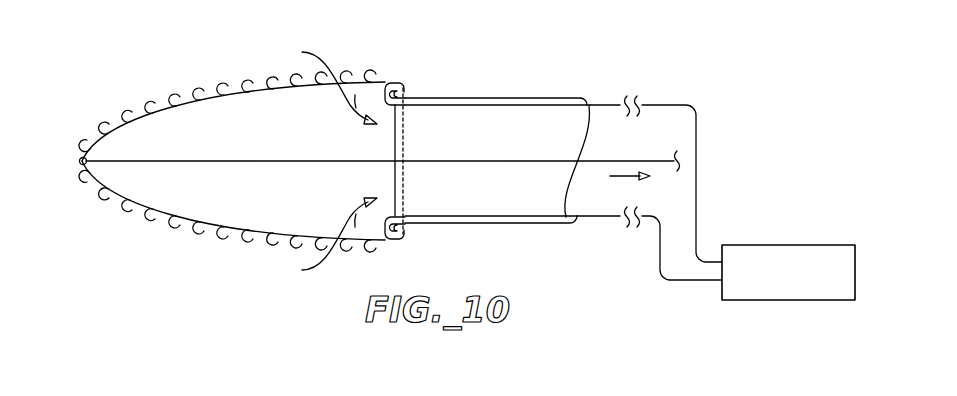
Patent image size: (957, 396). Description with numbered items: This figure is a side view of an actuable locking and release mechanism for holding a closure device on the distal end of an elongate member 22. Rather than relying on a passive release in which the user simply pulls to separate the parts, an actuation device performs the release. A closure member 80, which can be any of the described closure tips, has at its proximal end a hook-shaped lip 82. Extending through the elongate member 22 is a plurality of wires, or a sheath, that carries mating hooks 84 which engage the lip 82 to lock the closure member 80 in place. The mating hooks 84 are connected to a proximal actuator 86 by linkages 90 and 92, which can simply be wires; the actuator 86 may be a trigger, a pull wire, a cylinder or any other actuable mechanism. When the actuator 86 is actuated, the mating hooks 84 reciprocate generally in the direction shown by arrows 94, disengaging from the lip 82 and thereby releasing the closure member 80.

The elongate member 22 is at (526, 98).
The closure member 80 is at (212, 224).
The hook-shaped lip 82 is at (408, 231).
The mating hooks 84 is at (399, 80).
The actuator 86 is at (762, 244).
The linkage 90 is at (608, 106).
The linkage 92 is at (605, 218).
The arrows 94 is at (326, 159).